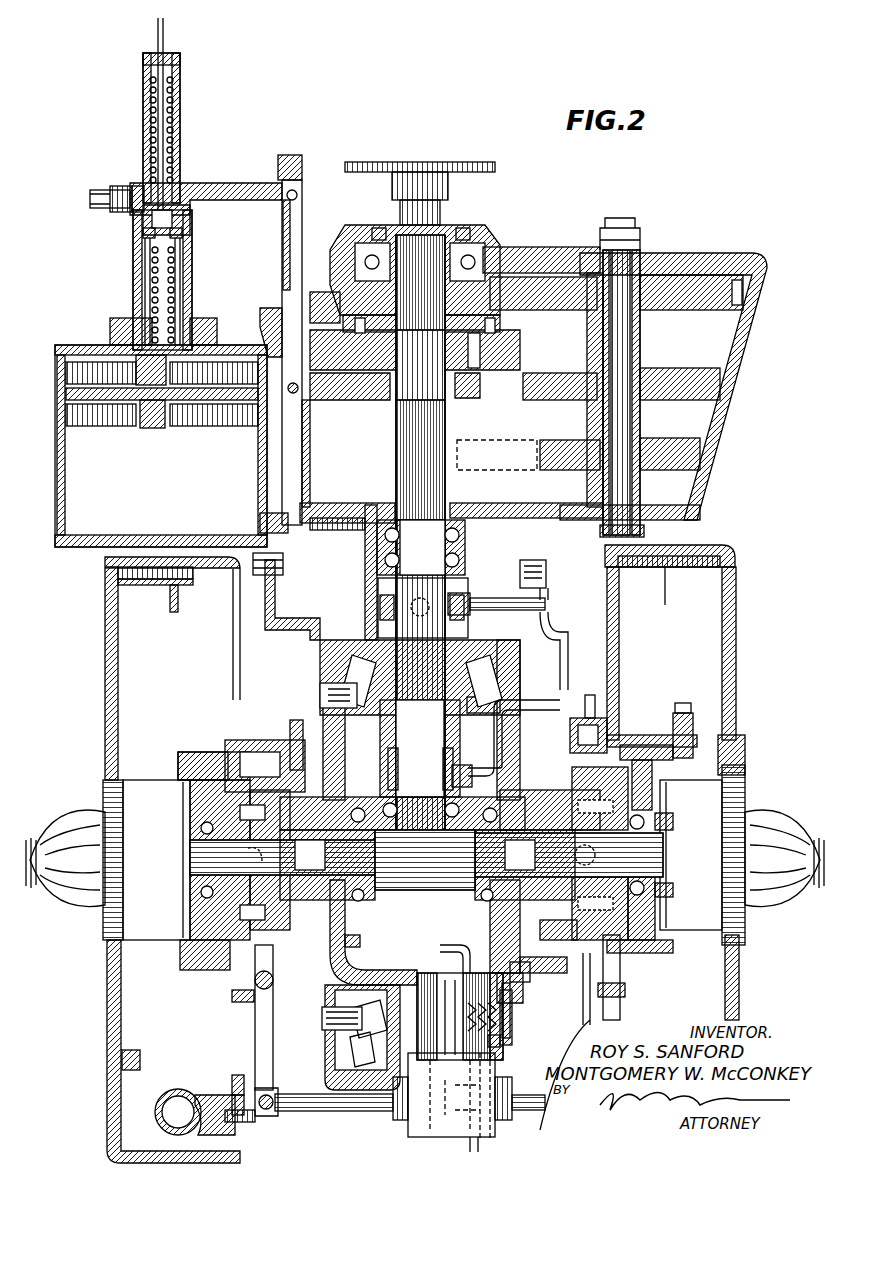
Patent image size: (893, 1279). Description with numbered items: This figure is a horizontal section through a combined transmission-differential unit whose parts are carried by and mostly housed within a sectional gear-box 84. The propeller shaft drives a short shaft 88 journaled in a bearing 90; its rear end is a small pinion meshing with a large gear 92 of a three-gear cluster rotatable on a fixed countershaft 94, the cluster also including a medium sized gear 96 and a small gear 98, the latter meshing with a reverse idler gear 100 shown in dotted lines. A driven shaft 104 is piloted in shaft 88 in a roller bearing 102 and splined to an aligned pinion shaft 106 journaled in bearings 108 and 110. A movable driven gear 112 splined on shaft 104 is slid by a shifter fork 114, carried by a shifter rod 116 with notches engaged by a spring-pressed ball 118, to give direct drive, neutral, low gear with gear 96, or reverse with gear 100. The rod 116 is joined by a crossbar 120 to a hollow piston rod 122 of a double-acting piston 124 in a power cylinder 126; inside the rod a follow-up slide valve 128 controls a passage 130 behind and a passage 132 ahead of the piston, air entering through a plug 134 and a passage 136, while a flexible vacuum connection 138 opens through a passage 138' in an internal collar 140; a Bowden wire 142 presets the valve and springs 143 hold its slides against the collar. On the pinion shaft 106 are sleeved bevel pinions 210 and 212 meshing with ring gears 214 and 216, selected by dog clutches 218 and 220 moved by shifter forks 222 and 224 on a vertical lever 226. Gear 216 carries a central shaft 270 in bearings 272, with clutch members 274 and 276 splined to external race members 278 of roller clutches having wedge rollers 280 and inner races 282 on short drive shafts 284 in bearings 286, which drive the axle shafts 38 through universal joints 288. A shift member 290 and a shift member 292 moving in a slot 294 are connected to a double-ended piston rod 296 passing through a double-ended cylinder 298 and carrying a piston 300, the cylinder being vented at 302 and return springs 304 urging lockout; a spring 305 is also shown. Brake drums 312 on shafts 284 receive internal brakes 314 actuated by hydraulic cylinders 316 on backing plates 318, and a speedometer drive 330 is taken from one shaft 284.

The rear axle shaft 38 is at (50, 812).
The housing or gear-box 84 is at (525, 262).
The short shaft 88 is at (440, 240).
The bearing 90 is at (362, 260).
The large gear 92 is at (690, 288).
The fixed countershaft 94 is at (622, 290).
The medium sized gear 96 is at (700, 388).
The small gear 98 is at (680, 455).
The reverse idler gear 100 is at (500, 470).
The roller bearing 102 is at (470, 232).
The driven shaft 104 is at (402, 440).
The pinion shaft 106 is at (410, 592).
The bearing 108 is at (380, 570).
The bearing 110 is at (372, 805).
The movable driven gear 112 is at (490, 370).
The shifter fork 114 is at (346, 398).
The shifter rod 116 is at (286, 272).
The spring-pressed ball 118 is at (312, 518).
The crossbar 120 is at (238, 183).
The piston rod 122 is at (134, 278).
The double-acting piston 124 is at (190, 400).
The power cylinder 126 is at (88, 472).
The slide valve 128 is at (143, 230).
The passage 130 is at (176, 258).
The passage 132 is at (183, 285).
The plug 134 is at (176, 52).
The passage 136 is at (140, 325).
The flexible vacuum connection 138 is at (87, 184).
The passage 138' is at (120, 184).
The internal collar 140 is at (190, 215).
The Bowden wire 142 is at (162, 130).
The springs 143 is at (150, 145).
The bevel pinion 210 is at (382, 712).
The bevel pinion 212 is at (500, 650).
The bevel ring gear 214 is at (340, 700).
The bevel ring gear 216 is at (352, 680).
The dog clutch 218 is at (462, 768).
The dog clutch 220 is at (470, 598).
The shifter fork 222 is at (560, 692).
The shifter fork 224 is at (520, 600).
The vertical lever 226 is at (534, 562).
The central shaft 270 is at (418, 870).
The bearings 272 is at (360, 902).
The clutch member 274 is at (526, 905).
The clutch member 276 is at (322, 925).
The external race member 278 is at (600, 775).
The wedge rollers 280 is at (238, 945).
The inner race 282 is at (210, 920).
The short drive shaft 284 is at (200, 875).
The bearings 286 is at (200, 898).
The universal joint 288 is at (72, 900).
The shift member 290 is at (262, 1030).
The shift member 292 is at (615, 1015).
The slot 294 is at (528, 985).
The double-ended piston rod 296 is at (310, 1110).
The double-ended cylinder 298 is at (420, 975).
The piston 300 is at (488, 1045).
The vent 302 is at (395, 1085).
The return springs 304 is at (498, 1040).
The spring 305 is at (470, 950).
The brake drum 312 is at (735, 615).
The internal brakes 314 is at (705, 548).
The hydraulic cylinder 316 is at (160, 1105).
The backing plate 318 is at (618, 630).
The speedometer drive 330 is at (618, 700).